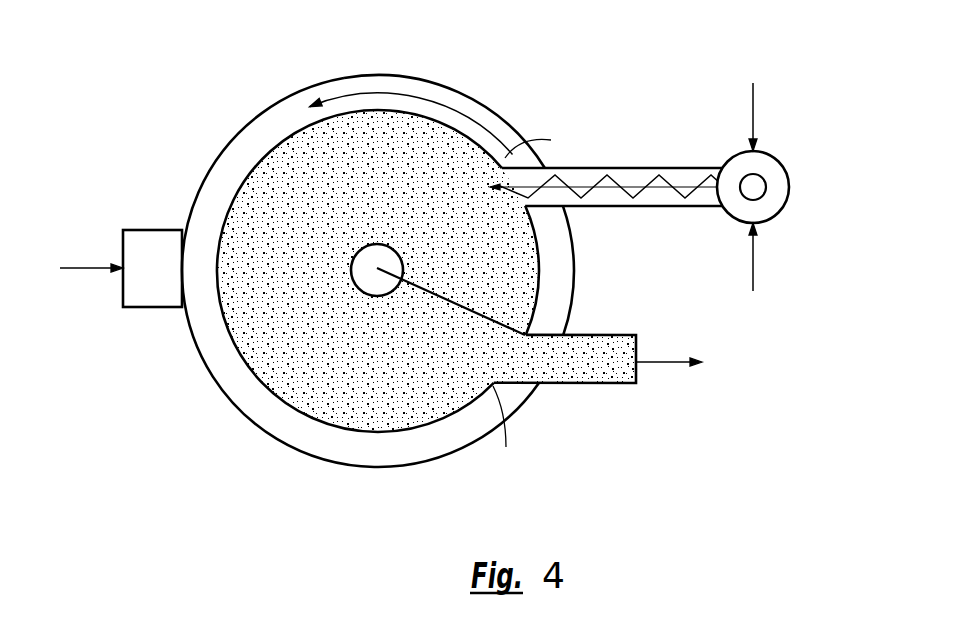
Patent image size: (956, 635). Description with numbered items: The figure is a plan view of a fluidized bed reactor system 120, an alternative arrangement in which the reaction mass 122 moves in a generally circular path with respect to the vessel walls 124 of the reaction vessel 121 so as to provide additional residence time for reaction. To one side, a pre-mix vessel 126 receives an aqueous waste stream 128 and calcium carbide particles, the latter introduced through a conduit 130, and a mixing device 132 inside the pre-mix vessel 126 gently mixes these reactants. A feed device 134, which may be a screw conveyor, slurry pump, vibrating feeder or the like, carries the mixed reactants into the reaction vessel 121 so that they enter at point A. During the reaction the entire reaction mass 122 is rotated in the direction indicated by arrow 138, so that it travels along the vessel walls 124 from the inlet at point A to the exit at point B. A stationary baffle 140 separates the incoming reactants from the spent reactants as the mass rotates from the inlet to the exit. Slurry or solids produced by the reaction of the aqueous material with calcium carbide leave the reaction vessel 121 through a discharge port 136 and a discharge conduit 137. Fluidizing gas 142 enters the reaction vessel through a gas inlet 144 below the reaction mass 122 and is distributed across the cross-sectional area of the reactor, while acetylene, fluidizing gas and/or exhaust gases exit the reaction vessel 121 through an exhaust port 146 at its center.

The reactor system 120 is at (221, 432).
The reaction vessel 121 is at (440, 459).
The reaction mass 122 is at (283, 142).
The vessel walls 124 is at (476, 100).
The pre-mix vessel 126 is at (779, 213).
The aqueous waste stream 128 is at (755, 106).
The conduit 130 is at (755, 277).
The mixing device 132 is at (762, 185).
The feed device 134 is at (675, 168).
The discharge port 136 is at (591, 384).
The discharge conduit 137 is at (672, 366).
The arrow 138 is at (372, 92).
The stationary baffle 140 is at (505, 318).
The fluidizing gas 142 is at (70, 271).
The gas inlet 144 is at (147, 308).
The exhaust port 146 is at (372, 283).